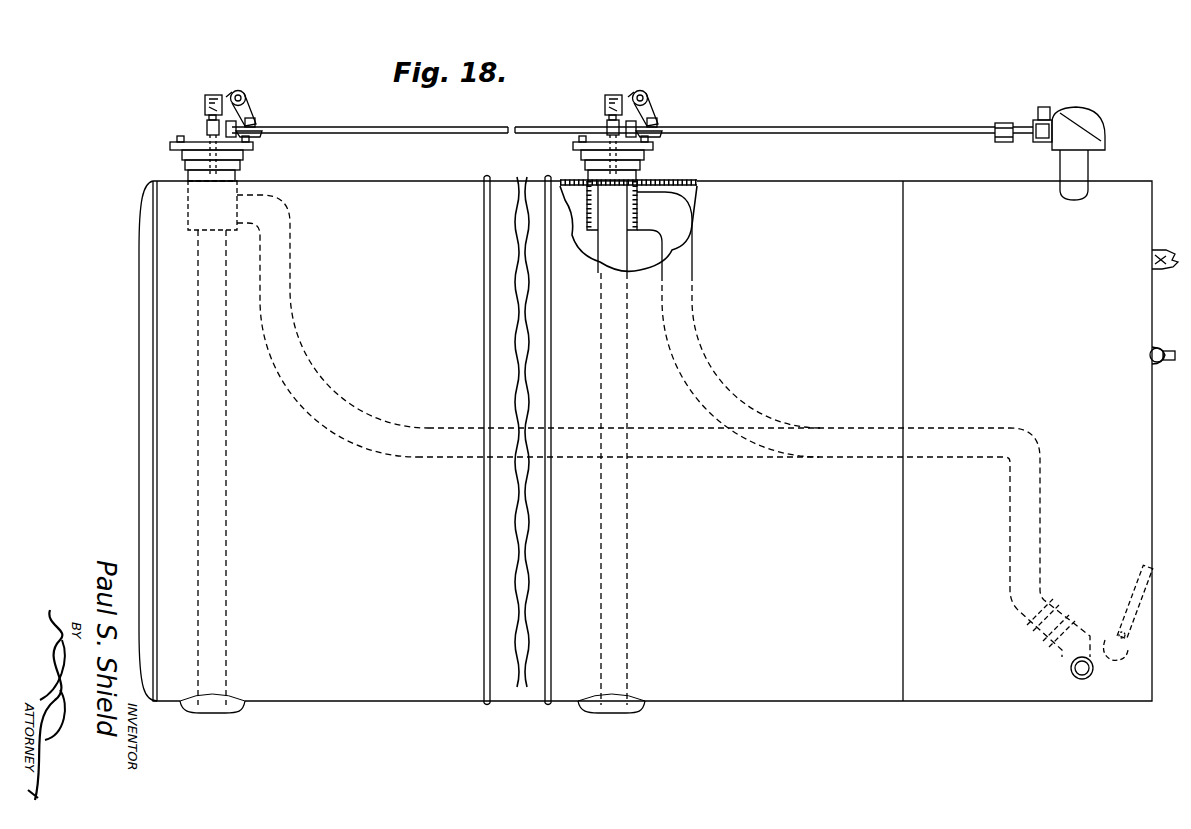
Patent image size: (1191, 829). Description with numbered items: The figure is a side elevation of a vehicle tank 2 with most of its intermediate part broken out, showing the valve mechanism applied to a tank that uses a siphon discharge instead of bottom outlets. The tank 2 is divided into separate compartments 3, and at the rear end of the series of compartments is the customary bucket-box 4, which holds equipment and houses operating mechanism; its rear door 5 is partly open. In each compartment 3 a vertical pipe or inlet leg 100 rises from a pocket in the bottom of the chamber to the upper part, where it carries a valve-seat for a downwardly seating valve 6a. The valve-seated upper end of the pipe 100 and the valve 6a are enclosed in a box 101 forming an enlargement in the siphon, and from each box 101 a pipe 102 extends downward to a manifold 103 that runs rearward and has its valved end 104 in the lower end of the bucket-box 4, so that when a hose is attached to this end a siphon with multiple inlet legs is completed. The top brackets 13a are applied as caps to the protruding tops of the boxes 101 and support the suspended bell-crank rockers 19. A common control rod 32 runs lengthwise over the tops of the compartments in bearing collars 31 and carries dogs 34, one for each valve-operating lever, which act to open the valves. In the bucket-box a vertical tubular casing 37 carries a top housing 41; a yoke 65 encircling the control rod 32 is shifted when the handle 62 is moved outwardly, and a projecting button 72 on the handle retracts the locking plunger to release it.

The tank 2 is at (838, 178).
The tank compartment 3 is at (557, 440).
The bucket-box 4 is at (993, 197).
The rear door 5 is at (1152, 269).
The downwardly seating valve 6a is at (232, 178).
The top bracket 13a is at (604, 130).
The offset bell-crank rocker 19 is at (240, 93).
The bearing collar 31 is at (250, 128).
The common control rod 32 is at (815, 120).
The dog 34 is at (258, 146).
The vertical tubular casing 37 is at (1086, 163).
The top housing 41 is at (1086, 102).
The handle 62 is at (1150, 355).
The yoke 65 is at (1001, 123).
The projecting button 72 is at (1165, 362).
The inlet leg 100 is at (228, 447).
The box 101 is at (188, 205).
The pipe 102 is at (292, 322).
The manifold 103 is at (744, 458).
The valved end 104 is at (1070, 668).